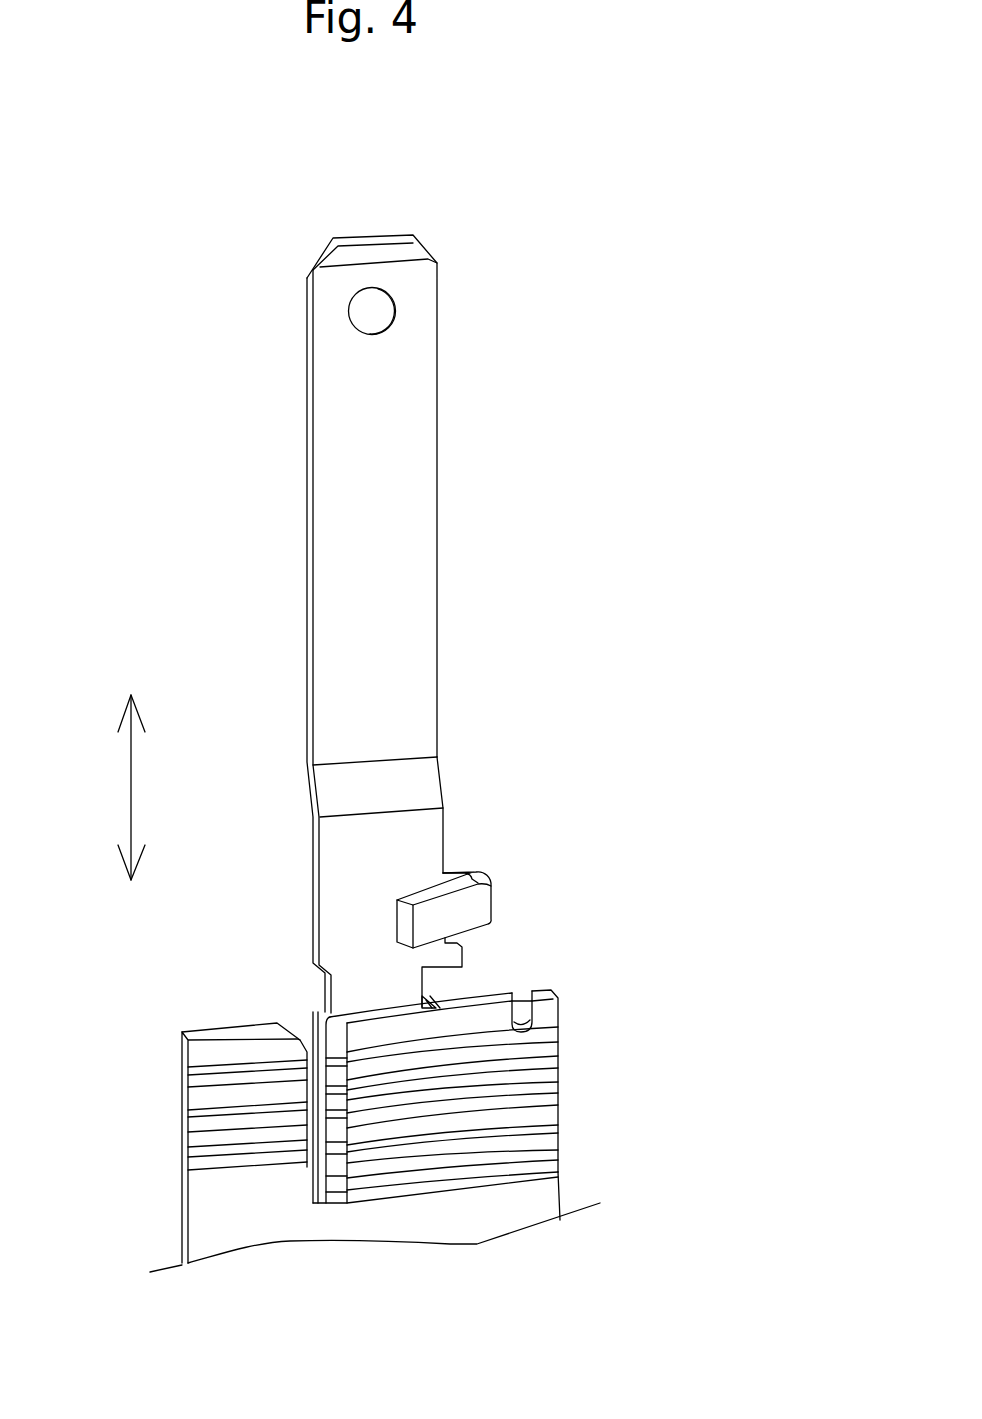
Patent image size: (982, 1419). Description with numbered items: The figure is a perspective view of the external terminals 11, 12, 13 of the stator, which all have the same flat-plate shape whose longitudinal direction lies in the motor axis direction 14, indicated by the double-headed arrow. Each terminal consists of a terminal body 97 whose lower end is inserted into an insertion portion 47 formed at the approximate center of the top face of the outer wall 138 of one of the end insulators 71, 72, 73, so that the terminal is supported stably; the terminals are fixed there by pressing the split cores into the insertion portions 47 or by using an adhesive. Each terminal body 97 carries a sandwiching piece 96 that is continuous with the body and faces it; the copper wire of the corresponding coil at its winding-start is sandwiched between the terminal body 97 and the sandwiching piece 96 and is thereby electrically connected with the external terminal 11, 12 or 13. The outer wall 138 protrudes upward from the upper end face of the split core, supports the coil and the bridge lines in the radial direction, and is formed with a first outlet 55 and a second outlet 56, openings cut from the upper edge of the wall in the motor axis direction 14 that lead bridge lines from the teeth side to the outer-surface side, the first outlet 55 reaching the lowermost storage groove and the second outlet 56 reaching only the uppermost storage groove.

The external terminal 11 is at (497, 624).
The external terminal 12 is at (497, 624).
The external terminal 13 is at (437, 512).
The motor axis direction 14 is at (131, 788).
The insertion portion 47 is at (432, 1002).
The first outlet 55 is at (302, 1022).
The second outlet 56 is at (522, 992).
The end insulator 71 is at (499, 1131).
The end insulator 72 is at (499, 1131).
The end insulator 73 is at (602, 1123).
The sandwiching piece 96 is at (442, 912).
The terminal body 97 is at (408, 847).
The outer wall 138 is at (152, 1022).